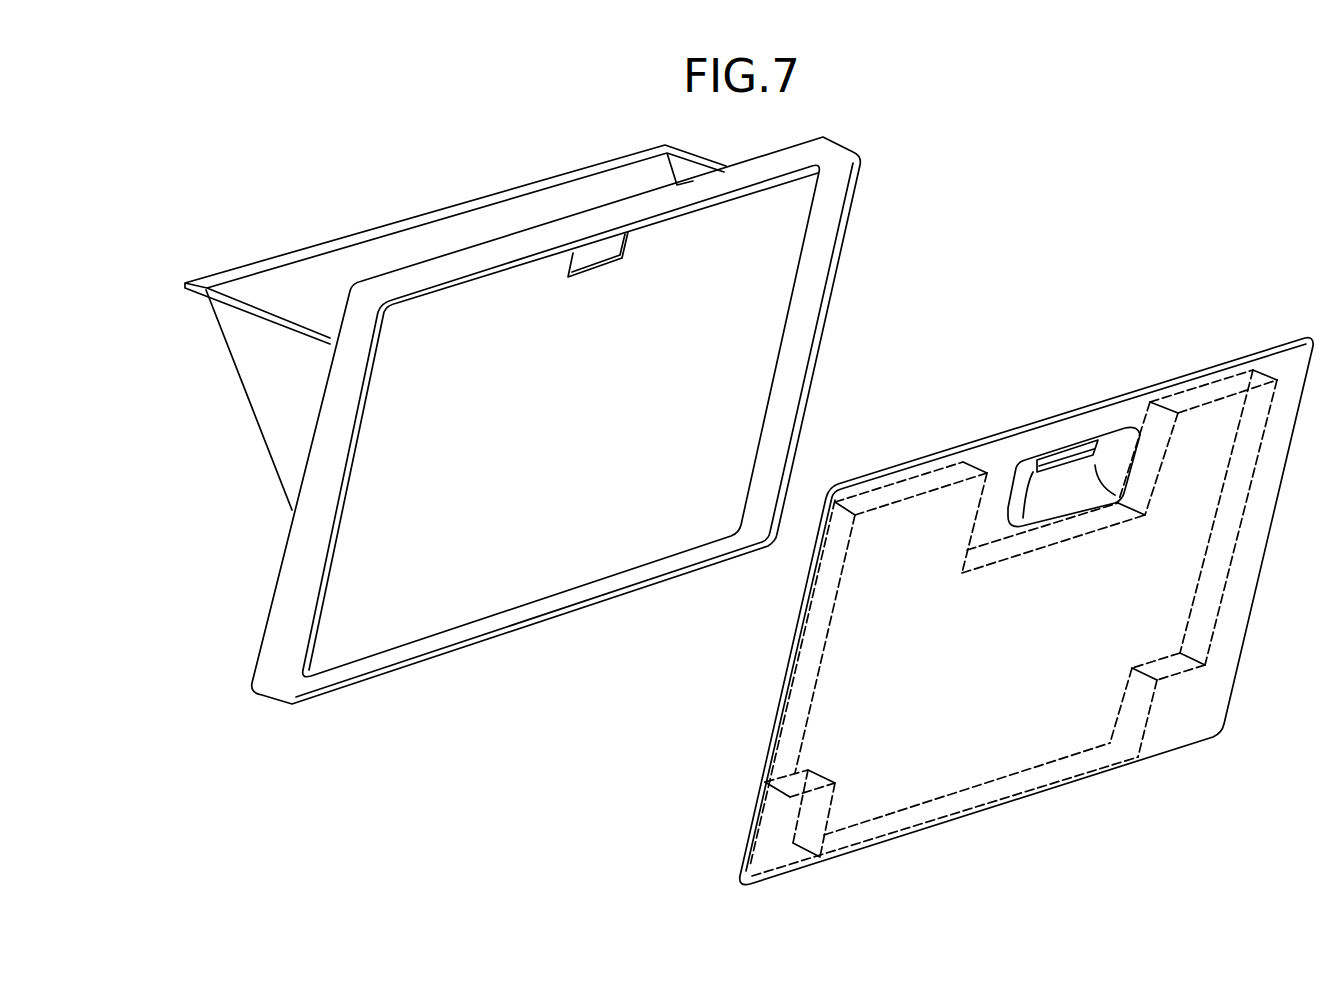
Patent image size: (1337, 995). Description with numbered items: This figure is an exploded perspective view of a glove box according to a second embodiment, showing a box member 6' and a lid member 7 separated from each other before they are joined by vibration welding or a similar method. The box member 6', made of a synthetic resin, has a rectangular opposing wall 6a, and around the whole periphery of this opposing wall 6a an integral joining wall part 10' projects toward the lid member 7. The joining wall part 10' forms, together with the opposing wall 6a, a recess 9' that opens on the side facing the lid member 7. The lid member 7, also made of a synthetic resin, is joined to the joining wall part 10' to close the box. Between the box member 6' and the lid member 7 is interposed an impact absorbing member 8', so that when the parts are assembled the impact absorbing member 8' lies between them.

The box member 6' is at (455, 316).
The opposing wall 6a is at (350, 523).
The recess 9' is at (556, 420).
The joining wall part 10' is at (574, 445).
The lid member 7 is at (1016, 671).
The impact absorbing member 8' is at (739, 813).